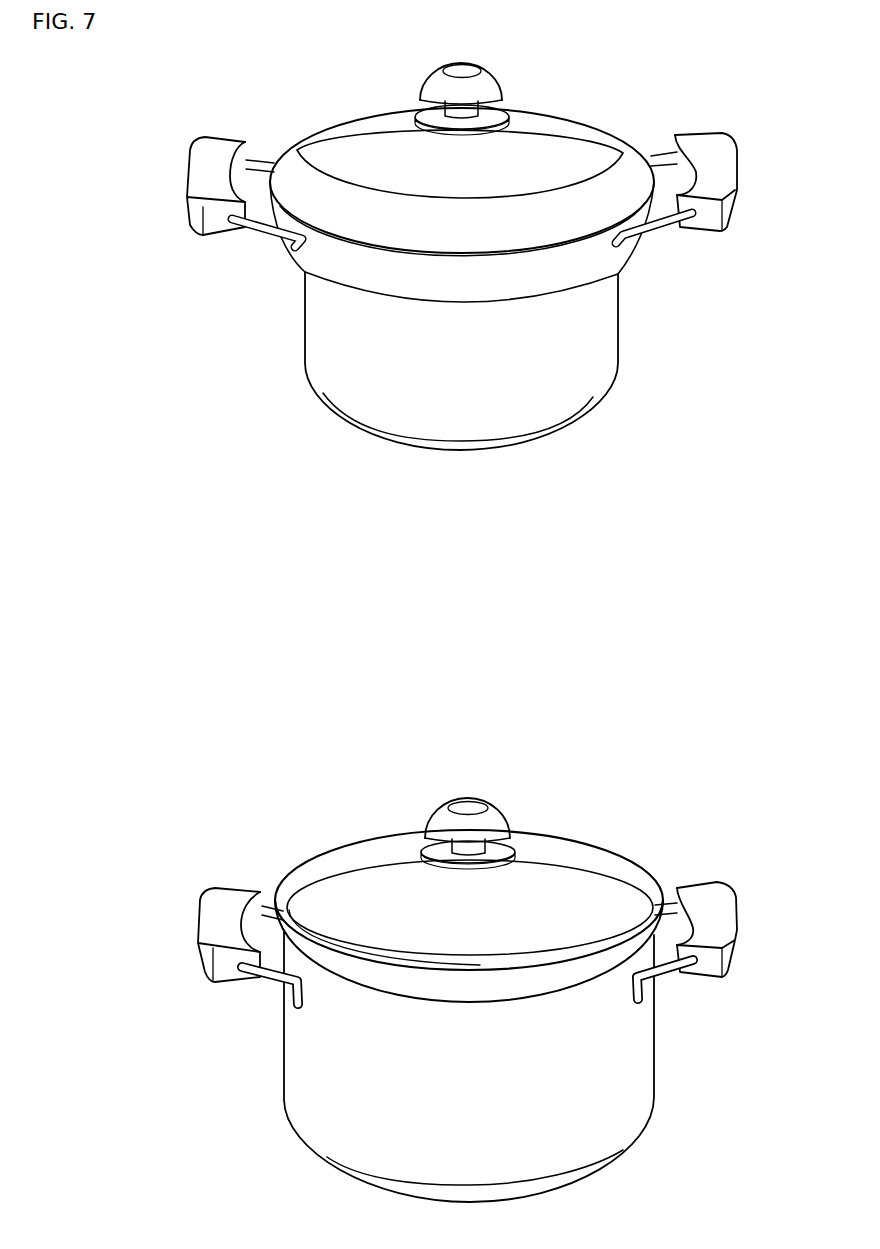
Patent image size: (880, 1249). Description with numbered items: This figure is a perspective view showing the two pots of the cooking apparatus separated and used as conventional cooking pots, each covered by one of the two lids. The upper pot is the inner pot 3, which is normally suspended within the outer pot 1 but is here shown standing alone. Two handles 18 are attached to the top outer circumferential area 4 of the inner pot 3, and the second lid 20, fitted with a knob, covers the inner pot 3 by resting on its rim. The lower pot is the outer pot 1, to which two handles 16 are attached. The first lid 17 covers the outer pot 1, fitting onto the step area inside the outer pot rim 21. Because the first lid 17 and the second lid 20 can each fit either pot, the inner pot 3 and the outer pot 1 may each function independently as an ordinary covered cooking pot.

The outer pot 1 is at (648, 1078).
The inner pot 3 is at (618, 340).
The top outer circumferential area 4 is at (348, 273).
The handles 16 is at (708, 889).
The first lid 17 is at (598, 897).
The handles 18 is at (694, 134).
The second lid 20 is at (578, 128).
The outer pot rim 21 is at (586, 838).